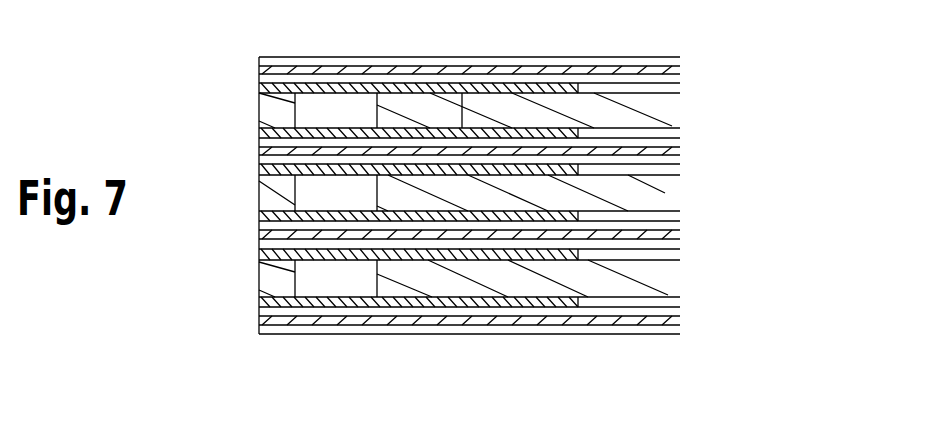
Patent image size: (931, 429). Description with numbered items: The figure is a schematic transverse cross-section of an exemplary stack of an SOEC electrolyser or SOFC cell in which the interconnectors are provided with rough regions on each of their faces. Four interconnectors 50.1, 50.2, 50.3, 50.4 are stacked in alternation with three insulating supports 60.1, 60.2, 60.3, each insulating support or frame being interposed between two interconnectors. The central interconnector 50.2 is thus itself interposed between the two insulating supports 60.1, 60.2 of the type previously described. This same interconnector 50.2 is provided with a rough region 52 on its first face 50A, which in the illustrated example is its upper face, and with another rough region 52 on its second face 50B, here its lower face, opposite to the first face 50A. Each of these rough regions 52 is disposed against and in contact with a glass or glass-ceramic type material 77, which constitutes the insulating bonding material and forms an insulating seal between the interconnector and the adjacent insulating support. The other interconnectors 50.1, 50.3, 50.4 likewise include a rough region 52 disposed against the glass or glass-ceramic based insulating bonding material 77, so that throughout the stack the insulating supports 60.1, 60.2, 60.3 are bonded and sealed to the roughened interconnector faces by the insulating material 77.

The interconnector 50.1 is at (681, 71).
The interconnector 50.2 is at (681, 153).
The interconnector 50.3 is at (681, 238).
The interconnector 50.4 is at (681, 320).
The first face 50A is at (666, 145).
The second face 50B is at (666, 145).
The insulating support 60.1 is at (665, 107).
The insulating support 60.2 is at (658, 192).
The insulating support 60.3 is at (662, 278).
The rough region 52 is at (333, 153).
The glass or glass-ceramic type material 77 is at (285, 92).